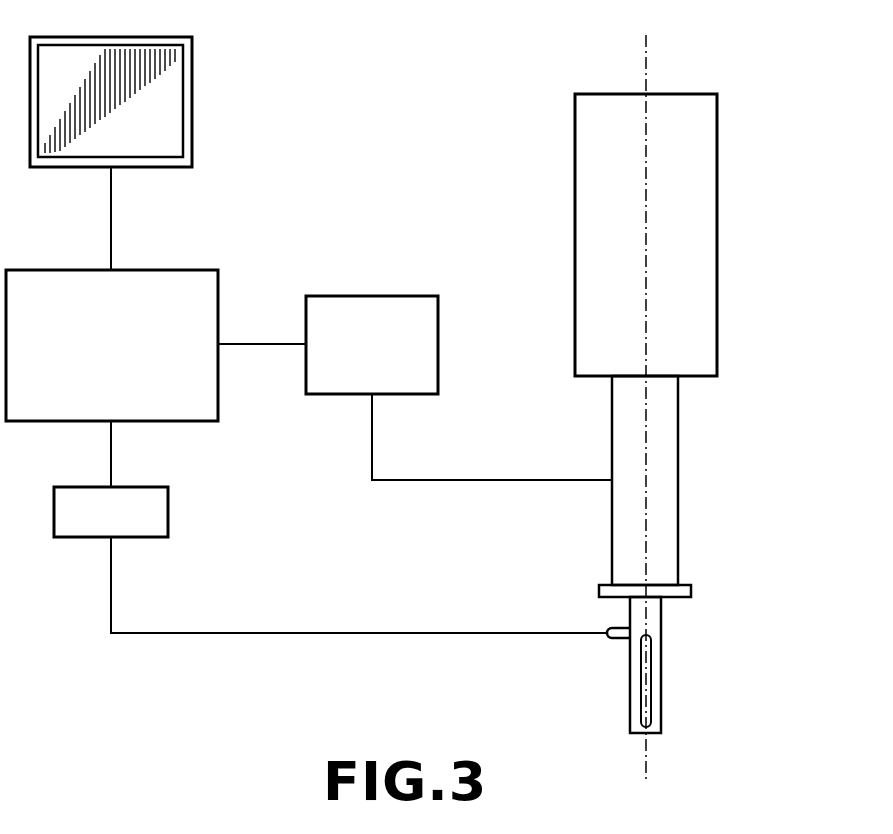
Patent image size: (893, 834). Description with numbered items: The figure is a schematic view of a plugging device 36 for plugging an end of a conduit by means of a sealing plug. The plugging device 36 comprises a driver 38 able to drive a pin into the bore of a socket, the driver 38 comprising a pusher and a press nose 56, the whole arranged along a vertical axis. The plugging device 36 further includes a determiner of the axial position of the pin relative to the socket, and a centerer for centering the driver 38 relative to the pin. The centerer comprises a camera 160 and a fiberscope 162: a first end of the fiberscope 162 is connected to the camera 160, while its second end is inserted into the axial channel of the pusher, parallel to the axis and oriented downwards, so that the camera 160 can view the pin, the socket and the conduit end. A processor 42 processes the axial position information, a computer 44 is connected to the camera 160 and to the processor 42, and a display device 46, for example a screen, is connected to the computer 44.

The plugging device 36 is at (752, 227).
The driver 38 is at (697, 554).
The processor 42 is at (367, 296).
The computer 44 is at (218, 292).
The display device 46 is at (192, 104).
The press nose 56 is at (678, 432).
The camera 160 is at (168, 516).
The fiberscope 162 is at (651, 678).